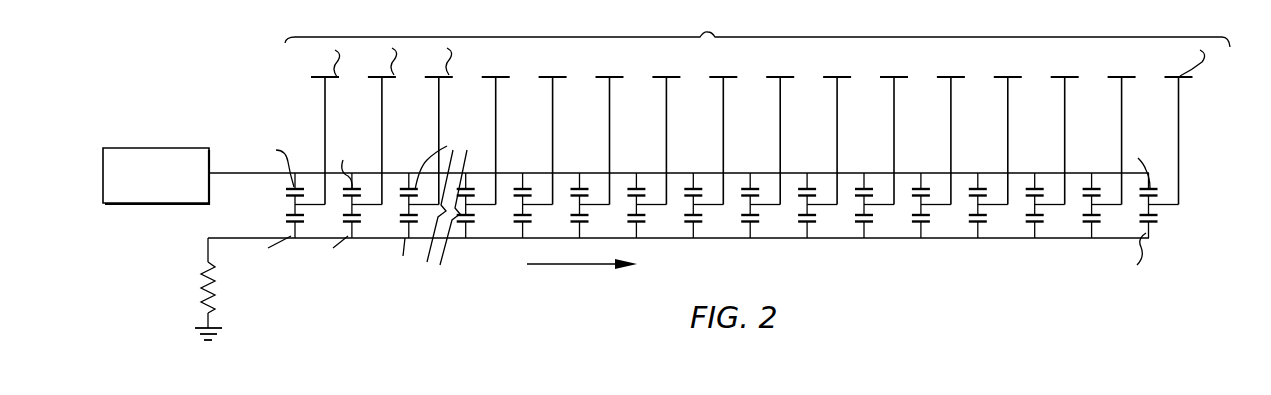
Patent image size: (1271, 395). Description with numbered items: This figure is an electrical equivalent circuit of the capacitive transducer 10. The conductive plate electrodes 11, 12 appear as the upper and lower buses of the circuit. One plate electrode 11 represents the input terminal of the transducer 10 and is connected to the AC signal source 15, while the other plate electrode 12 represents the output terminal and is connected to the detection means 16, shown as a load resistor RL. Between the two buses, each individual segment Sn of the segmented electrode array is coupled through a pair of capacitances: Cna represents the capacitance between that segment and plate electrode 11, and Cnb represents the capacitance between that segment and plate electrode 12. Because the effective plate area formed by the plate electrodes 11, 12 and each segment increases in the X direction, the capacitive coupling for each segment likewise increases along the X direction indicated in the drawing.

The capacitive transducer 10 is at (729, 162).
The plate electrode 11 is at (392, 172).
The plate electrode 12 is at (385, 238).
The AC signal source 15 is at (168, 128).
The detection means 16 is at (200, 270).